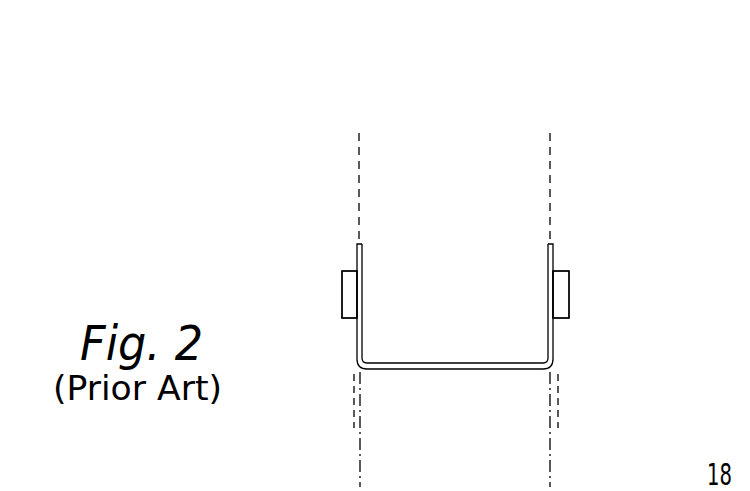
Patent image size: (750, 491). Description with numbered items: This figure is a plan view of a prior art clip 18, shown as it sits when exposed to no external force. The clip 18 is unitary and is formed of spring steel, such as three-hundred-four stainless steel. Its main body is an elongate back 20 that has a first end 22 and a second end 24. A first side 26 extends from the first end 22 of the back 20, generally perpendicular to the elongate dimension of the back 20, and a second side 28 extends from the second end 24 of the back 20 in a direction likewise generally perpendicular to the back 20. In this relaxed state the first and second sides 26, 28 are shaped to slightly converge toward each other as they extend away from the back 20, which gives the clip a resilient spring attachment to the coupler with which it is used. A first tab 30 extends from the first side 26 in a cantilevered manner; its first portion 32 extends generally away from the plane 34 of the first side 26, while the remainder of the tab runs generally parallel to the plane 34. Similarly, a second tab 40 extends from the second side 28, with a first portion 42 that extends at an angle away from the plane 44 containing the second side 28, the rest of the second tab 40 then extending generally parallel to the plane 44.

The clip 18 is at (665, 166).
The back 20 is at (452, 370).
The first end 22 is at (357, 372).
The second end 24 is at (553, 372).
The first side 26 is at (356, 253).
The second side 28 is at (554, 258).
The first tab 30 is at (342, 292).
The first portion 32 is at (346, 305).
The plane 34 is at (362, 138).
The second tab 40 is at (570, 295).
The first portion 42 is at (563, 308).
The plane 44 is at (552, 155).